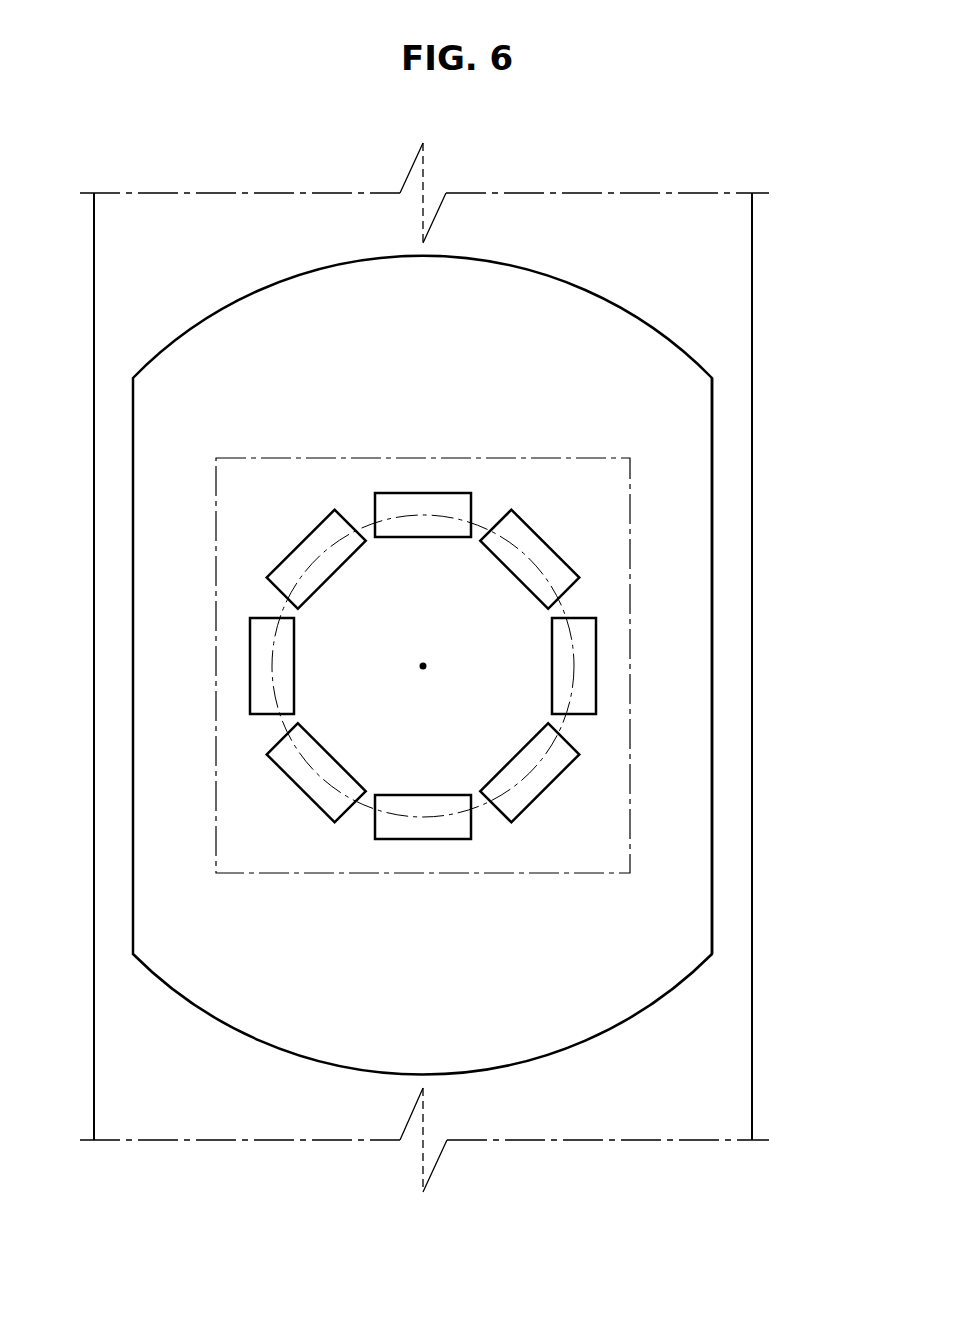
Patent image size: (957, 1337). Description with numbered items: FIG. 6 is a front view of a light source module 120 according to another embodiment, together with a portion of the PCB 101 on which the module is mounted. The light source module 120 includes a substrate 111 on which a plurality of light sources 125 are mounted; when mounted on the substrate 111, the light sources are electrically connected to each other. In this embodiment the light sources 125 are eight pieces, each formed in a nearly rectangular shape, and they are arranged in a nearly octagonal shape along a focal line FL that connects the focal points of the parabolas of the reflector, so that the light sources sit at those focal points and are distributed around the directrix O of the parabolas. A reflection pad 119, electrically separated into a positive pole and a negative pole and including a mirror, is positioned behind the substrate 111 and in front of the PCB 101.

The PCB 101 is at (728, 248).
The light source module 120 is at (708, 366).
The reflection pad 119 is at (705, 889).
The substrate 111 is at (630, 803).
The focal line FL is at (542, 571).
The light sources 125 is at (587, 685).
The directrix O is at (433, 655).